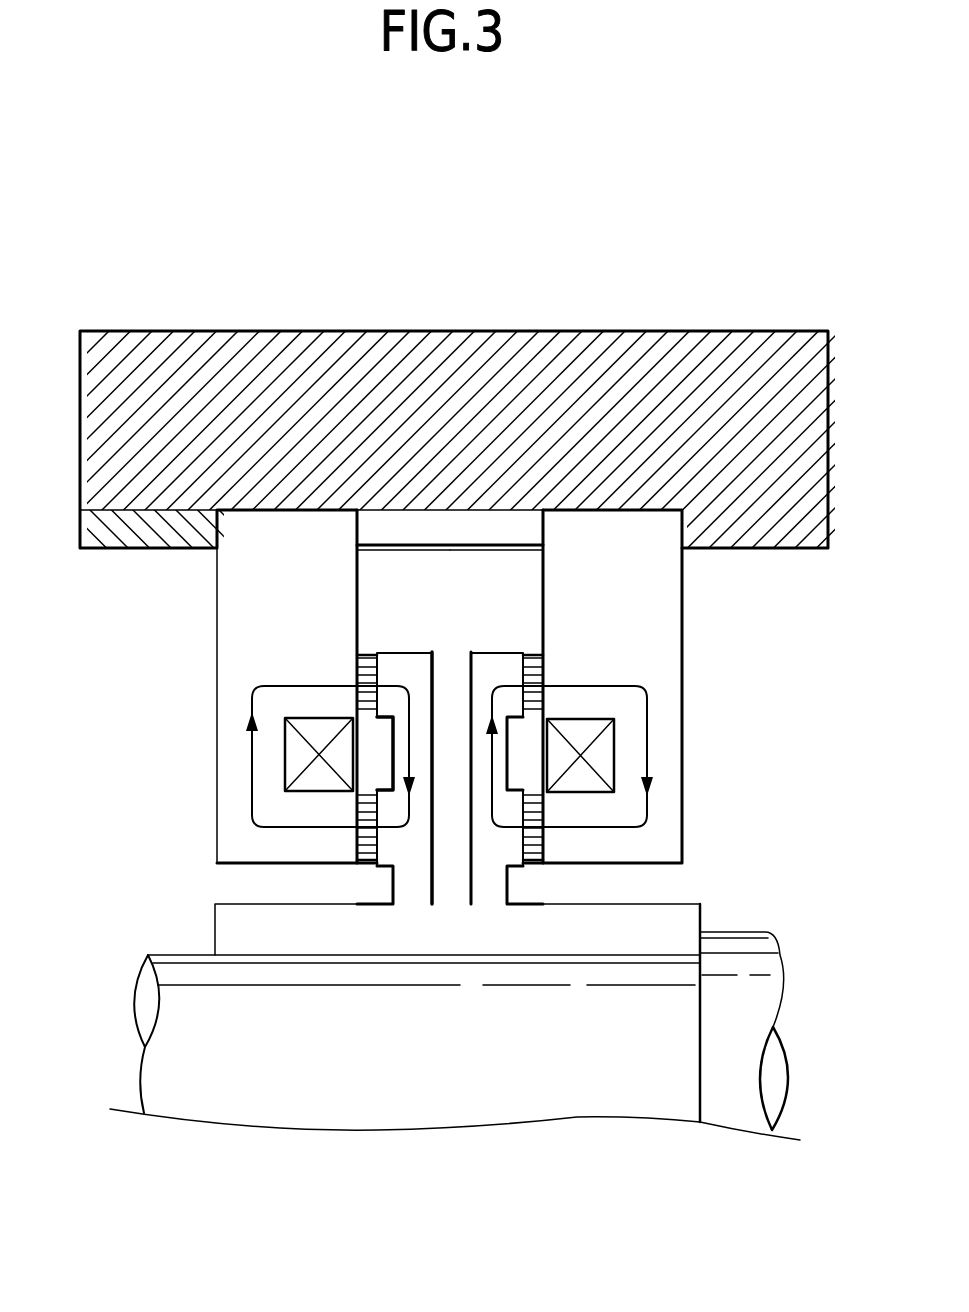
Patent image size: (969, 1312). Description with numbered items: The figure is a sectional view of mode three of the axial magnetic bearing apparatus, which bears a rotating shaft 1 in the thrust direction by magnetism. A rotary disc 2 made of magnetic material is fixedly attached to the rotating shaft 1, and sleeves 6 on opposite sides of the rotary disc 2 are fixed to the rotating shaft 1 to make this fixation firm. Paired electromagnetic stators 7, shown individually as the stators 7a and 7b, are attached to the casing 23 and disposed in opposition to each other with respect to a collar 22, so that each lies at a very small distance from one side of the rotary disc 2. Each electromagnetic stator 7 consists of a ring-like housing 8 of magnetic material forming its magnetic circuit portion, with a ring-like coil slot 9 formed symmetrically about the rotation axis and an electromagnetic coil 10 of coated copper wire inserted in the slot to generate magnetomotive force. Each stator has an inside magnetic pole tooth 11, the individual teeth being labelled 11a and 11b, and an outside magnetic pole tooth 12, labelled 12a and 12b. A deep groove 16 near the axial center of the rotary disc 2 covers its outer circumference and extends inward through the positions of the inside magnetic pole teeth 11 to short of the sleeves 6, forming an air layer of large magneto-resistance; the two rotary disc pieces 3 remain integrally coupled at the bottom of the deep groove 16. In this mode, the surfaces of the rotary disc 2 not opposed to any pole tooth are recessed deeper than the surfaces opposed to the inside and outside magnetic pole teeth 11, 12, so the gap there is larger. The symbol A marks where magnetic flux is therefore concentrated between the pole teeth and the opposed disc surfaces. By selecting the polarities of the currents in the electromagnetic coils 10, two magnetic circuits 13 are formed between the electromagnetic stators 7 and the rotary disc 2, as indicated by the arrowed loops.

The rotating shaft 1 is at (183, 1003).
The rotary disc 2 is at (372, 647).
The rotary disc pieces 3 is at (393, 667).
The sleeves 6 is at (250, 927).
The electromagnetic stator 7 is at (377, 228).
The first stator half 7a is at (303, 543).
The second stator half 7b is at (593, 547).
The ring-like housing 8 is at (252, 583).
The coil slot 9 is at (283, 753).
The electromagnetic coil 10 is at (300, 770).
The inside magnetic pole tooth 11 is at (375, 1022).
The first fixing portion 11a is at (358, 862).
The second fixing portion 11b is at (542, 862).
The outside magnetic pole tooth 12 is at (808, 557).
The first cover wall 12a is at (357, 612).
The second cover wall 12b is at (545, 628).
The magnetic circuit 13 is at (252, 703).
The deep groove 16 is at (446, 888).
The collar 22 is at (447, 530).
The casing 23 is at (153, 362).
The flux concentration portion A is at (363, 658).